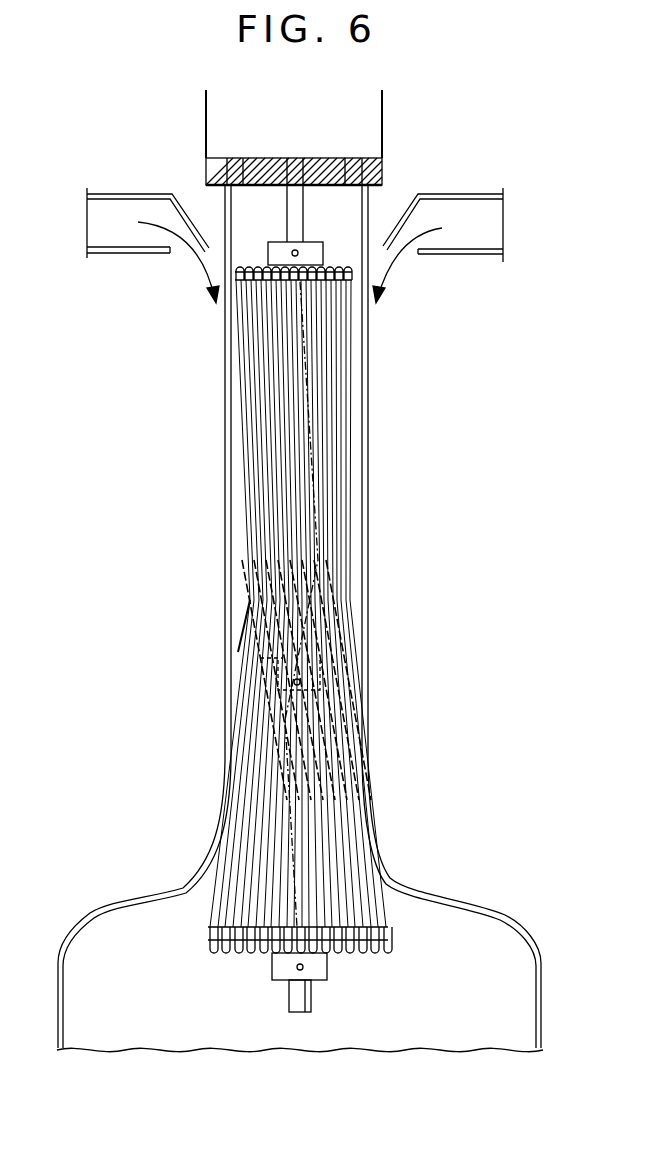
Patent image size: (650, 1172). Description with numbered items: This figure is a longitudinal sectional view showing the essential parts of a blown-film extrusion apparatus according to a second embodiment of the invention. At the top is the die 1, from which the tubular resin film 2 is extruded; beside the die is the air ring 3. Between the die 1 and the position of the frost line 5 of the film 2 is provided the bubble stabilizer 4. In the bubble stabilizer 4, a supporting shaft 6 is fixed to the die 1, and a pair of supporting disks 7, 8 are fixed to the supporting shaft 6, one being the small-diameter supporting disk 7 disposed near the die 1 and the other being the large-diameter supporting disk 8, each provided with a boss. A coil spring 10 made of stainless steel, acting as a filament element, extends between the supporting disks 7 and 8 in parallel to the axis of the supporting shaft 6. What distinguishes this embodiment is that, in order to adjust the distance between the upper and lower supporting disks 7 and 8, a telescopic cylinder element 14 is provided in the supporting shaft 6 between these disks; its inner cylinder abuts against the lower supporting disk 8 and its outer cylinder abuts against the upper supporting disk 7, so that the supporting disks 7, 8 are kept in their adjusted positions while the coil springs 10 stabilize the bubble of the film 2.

The die 1 is at (332, 158).
The tubular resin film 2 is at (368, 500).
The air ring 3 is at (452, 198).
The bubble stabilizer 4 is at (279, 641).
The frost line 5 is at (103, 1047).
The supporting shaft 6 is at (225, 172).
The small-diameter supporting disk 7 is at (257, 290).
The large-diameter supporting disk 8 is at (250, 955).
The coil spring 10 is at (330, 578).
The telescopic cylinder element 14 is at (238, 652).